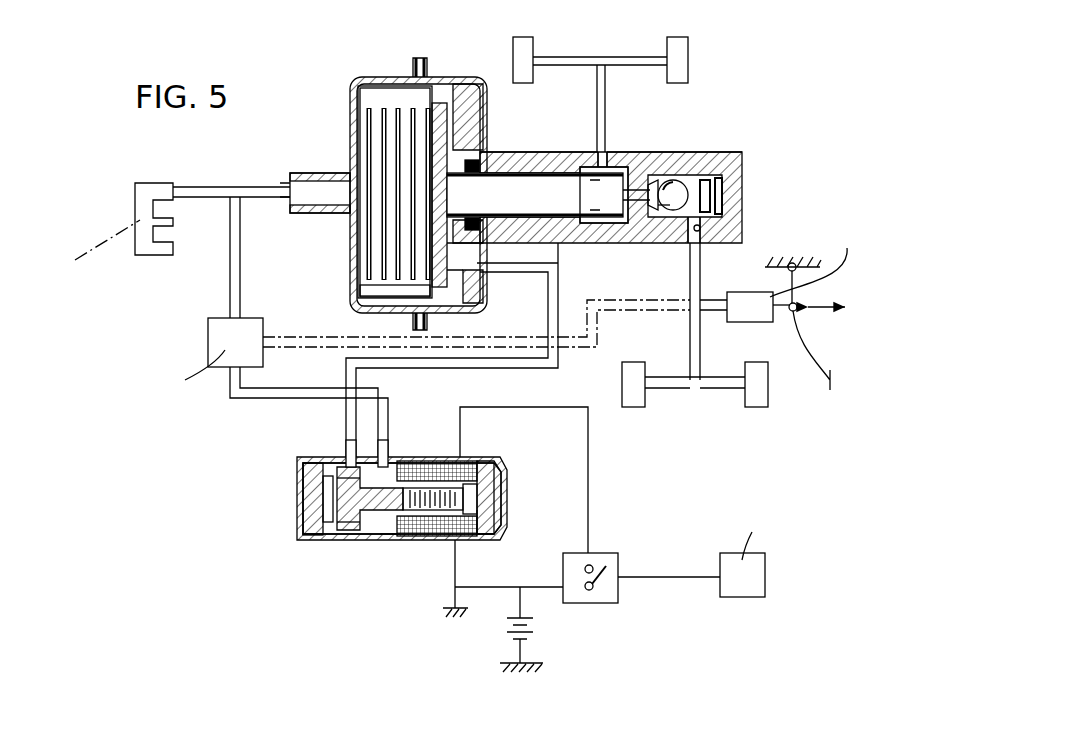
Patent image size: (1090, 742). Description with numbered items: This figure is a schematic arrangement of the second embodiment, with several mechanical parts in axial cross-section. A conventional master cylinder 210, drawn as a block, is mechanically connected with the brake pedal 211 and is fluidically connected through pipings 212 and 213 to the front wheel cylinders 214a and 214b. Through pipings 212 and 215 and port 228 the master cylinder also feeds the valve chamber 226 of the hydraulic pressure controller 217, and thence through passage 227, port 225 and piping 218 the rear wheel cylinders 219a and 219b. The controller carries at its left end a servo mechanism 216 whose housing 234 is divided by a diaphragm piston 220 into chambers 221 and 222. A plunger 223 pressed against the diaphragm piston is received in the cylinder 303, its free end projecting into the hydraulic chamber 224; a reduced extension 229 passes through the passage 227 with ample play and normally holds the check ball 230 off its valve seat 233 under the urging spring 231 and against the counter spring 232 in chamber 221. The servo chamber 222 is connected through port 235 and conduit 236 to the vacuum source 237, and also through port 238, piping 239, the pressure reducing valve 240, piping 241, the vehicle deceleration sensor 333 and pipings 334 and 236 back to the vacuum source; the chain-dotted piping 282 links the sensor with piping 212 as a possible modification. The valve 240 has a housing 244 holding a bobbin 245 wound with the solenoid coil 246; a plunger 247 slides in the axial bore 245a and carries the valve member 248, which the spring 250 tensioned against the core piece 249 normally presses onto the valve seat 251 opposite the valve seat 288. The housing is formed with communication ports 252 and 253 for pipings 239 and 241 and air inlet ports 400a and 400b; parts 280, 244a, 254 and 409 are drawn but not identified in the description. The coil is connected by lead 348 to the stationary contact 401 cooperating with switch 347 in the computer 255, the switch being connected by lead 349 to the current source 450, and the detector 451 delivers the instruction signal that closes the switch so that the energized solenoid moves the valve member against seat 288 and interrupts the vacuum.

The servo mechanism 216 is at (407, 55).
The housing 234 is at (372, 80).
The counter spring 232 is at (365, 115).
The servo chamber 222 is at (445, 92).
The diaphragm piston 220 is at (435, 210).
The chamber 221 is at (370, 290).
The port 235 is at (320, 185).
The port 238 is at (480, 264).
The vacuum source 237 is at (140, 185).
The conduit 236 is at (205, 190).
The piping 334 is at (235, 250).
The vehicle deceleration sensor 333 is at (215, 340).
The piping 282 is at (492, 337).
The piping 241 is at (280, 396).
The piping 239 is at (543, 362).
The hydraulic pressure controller 217 is at (748, 182).
The plunger 223 is at (540, 185).
The cylinder 303 is at (535, 160).
The hydraulic chamber 224 is at (561, 248).
The valve seat 233 is at (668, 182).
The check ball 230 is at (700, 180).
The urging spring 231 is at (718, 180).
The passage 227 is at (650, 215).
The reduced extension 229 is at (672, 217).
The port 225 is at (605, 160).
The valve chamber 226 is at (720, 200).
The port 228 is at (703, 226).
The piping 218 is at (597, 96).
The rear wheel cylinder 219a is at (530, 45).
The rear wheel cylinder 219b is at (685, 45).
The piping 215 is at (690, 268).
The piping 212 is at (700, 300).
The piping 213 is at (690, 348).
The master cylinder 210 is at (733, 312).
The brake pedal 211 is at (812, 350).
The front wheel cylinder 214a is at (634, 400).
The front wheel cylinder 214b is at (760, 400).
The pressure reducing valve 240 is at (296, 532).
The housing 244 is at (303, 462).
The air inlet port 400b is at (302, 470).
The seal 280 is at (322, 500).
The communication port 252 is at (338, 462).
The valve seat 288 is at (360, 460).
The communication port 253 is at (387, 468).
The plunger 247 is at (430, 476).
The solenoid coil 246 is at (420, 540).
The core piece 249 is at (490, 498).
The spring 250 is at (485, 480).
The bobbin 245 is at (482, 522).
The axial bore 245a is at (470, 532).
The valve member 248 is at (355, 540).
The valve seat 251 is at (342, 541).
The air inlet port 400a is at (312, 541).
The housing portion 244a is at (396, 541).
The lead 348 is at (590, 480).
The computer 255 is at (698, 558).
The stationary contact 401 is at (592, 564).
The switch 347 is at (589, 592).
The lead 349 is at (518, 587).
The ground 254 is at (450, 608).
The current source 450 is at (505, 630).
The electric lead 409 is at (660, 578).
The detector 451 is at (766, 580).